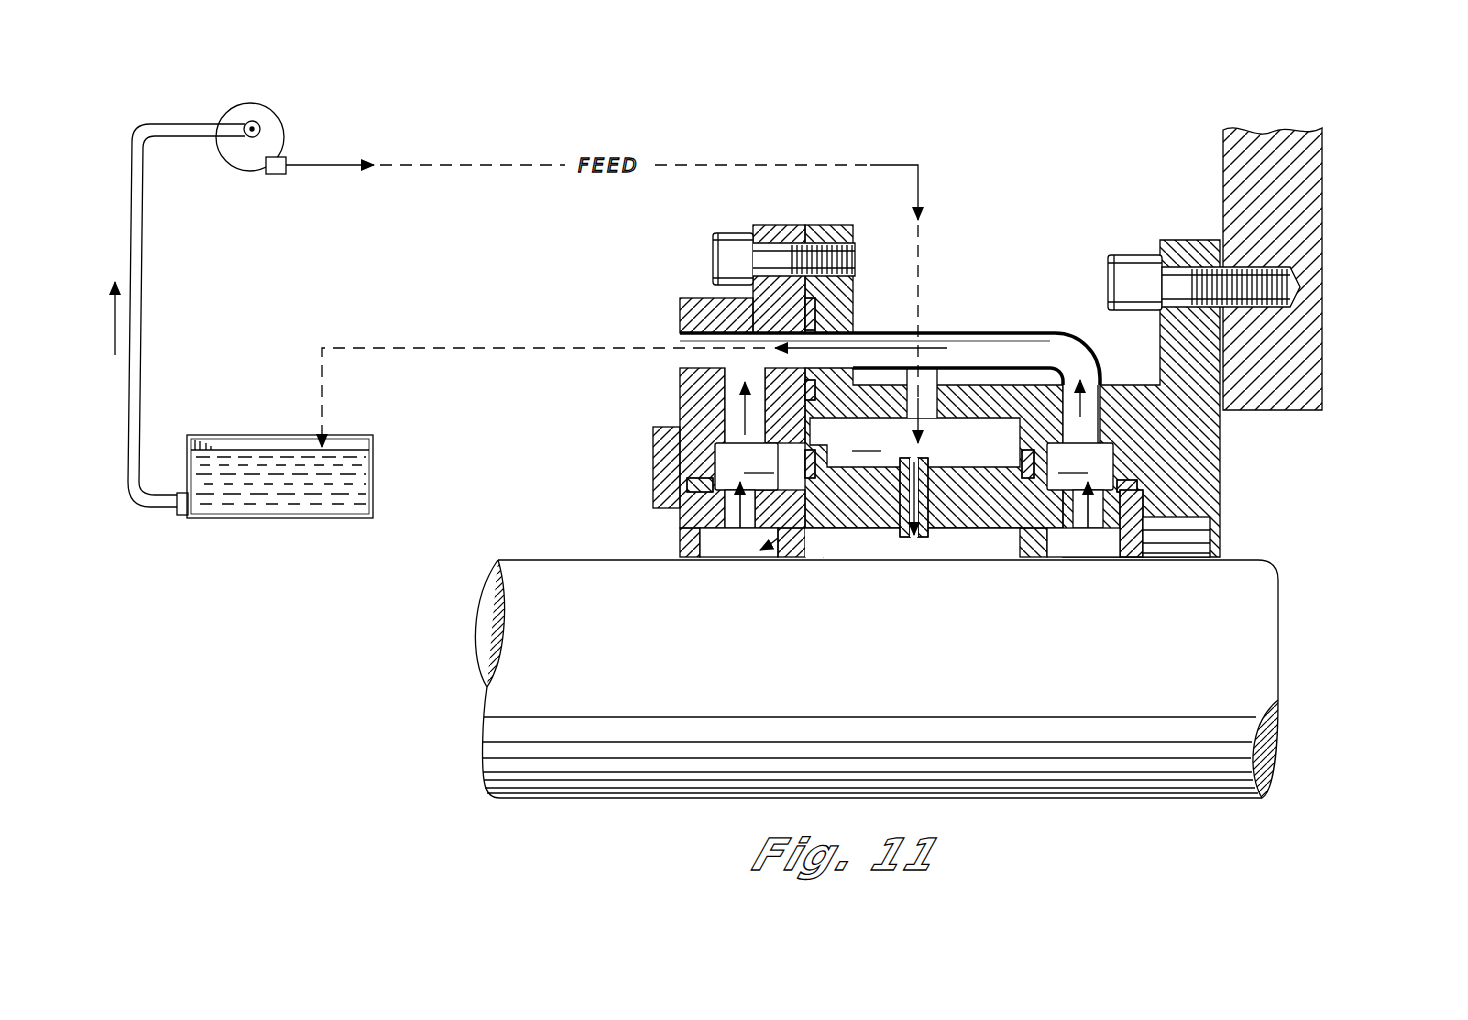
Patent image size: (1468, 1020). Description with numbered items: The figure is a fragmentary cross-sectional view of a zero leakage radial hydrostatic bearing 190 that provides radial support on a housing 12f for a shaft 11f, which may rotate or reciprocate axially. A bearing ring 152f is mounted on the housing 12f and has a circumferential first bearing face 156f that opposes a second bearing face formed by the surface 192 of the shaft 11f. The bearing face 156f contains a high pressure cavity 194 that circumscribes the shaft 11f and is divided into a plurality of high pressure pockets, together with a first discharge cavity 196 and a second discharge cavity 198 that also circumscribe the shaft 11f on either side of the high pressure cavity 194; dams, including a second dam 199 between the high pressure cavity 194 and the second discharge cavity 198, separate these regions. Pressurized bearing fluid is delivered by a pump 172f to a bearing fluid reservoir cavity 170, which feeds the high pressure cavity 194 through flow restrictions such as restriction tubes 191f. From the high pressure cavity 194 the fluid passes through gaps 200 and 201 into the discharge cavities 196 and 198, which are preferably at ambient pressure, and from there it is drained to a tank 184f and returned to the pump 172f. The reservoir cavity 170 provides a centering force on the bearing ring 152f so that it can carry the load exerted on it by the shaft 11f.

The shaft 11f is at (1273, 620).
The housing 12f is at (1315, 186).
The bearing ring 152f is at (656, 514).
The first bearing face 156f is at (782, 558).
The bearing fluid reservoir cavity 170 is at (963, 432).
The pump 172f is at (274, 127).
The tank 184f is at (300, 522).
The zero leakage radial hydrostatic bearing 190 is at (937, 339).
The restriction tube 191f is at (934, 555).
The surface of shaft 192 is at (920, 558).
The high pressure cavity 194 is at (887, 545).
The first discharge cavity 196 is at (728, 543).
The second discharge cavity 198 is at (795, 562).
The second dam 199 is at (1030, 556).
The gap 200 is at (803, 560).
The gap 201 is at (1060, 550).